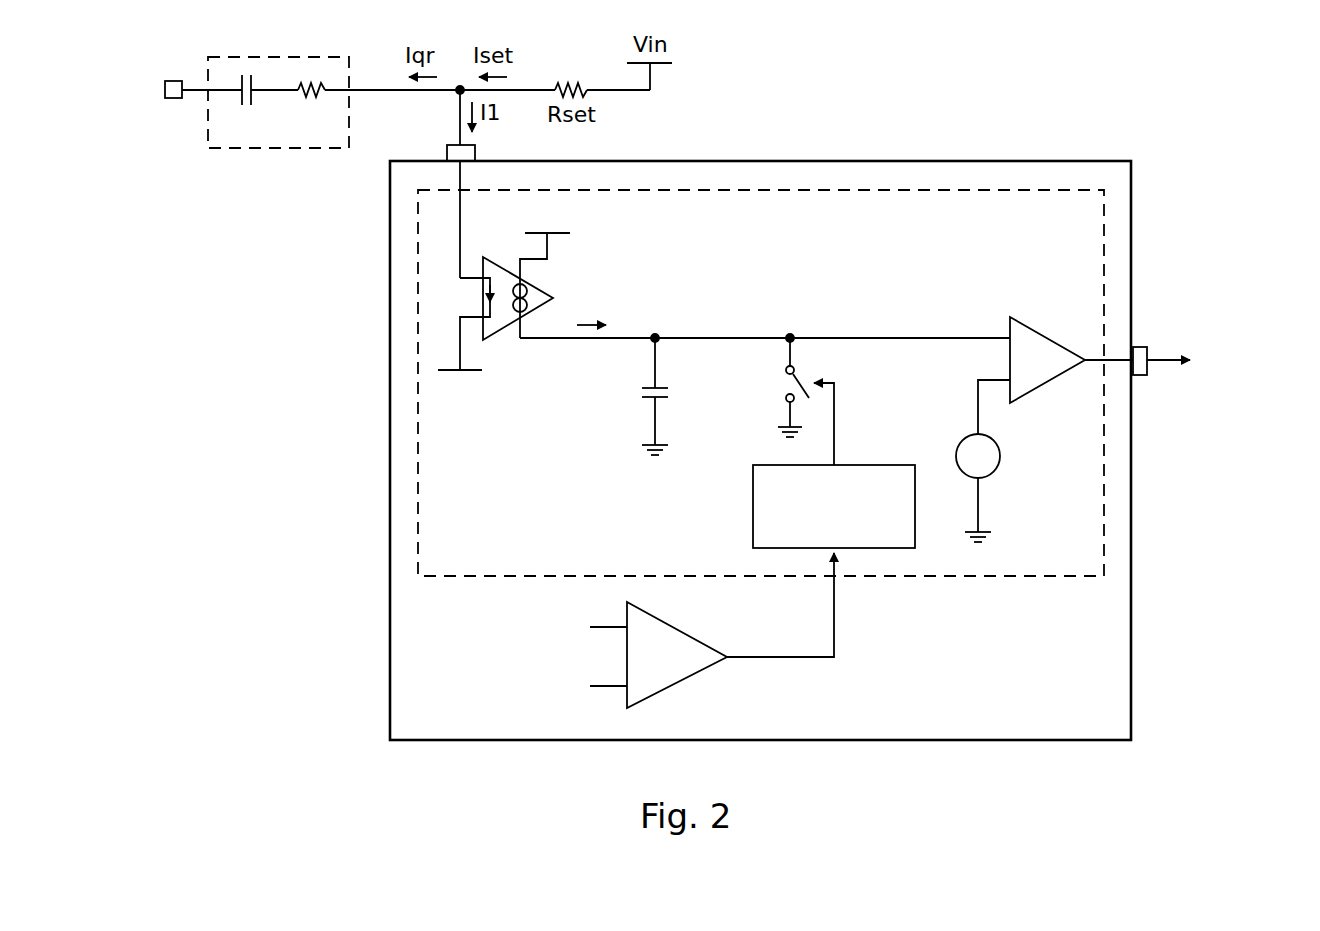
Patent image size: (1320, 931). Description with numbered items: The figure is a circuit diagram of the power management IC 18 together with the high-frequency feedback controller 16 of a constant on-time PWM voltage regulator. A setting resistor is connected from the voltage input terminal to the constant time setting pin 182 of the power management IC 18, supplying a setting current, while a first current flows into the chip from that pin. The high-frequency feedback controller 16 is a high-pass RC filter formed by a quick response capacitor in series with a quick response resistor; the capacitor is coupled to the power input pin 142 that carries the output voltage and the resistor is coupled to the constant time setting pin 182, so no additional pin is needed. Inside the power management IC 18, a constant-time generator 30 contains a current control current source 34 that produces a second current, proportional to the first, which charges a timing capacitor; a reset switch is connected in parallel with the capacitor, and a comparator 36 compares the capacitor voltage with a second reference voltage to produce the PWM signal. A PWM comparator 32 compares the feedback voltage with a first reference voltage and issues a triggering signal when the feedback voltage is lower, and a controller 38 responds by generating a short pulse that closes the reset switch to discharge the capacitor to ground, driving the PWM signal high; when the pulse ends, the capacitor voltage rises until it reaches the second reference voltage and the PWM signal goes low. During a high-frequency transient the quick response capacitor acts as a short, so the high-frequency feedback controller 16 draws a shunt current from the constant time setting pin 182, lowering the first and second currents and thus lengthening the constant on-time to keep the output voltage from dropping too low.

The power input pin 142 is at (172, 98).
The high-frequency feedback controller 16 is at (275, 148).
The constant time setting pin 182 is at (447, 148).
The power management IC 18 is at (858, 163).
The constant-time generator 30 is at (967, 578).
The current control current source 34 is at (505, 330).
The comparator 36 is at (1047, 332).
The controller 38 is at (753, 505).
The PWM comparator 32 is at (680, 627).